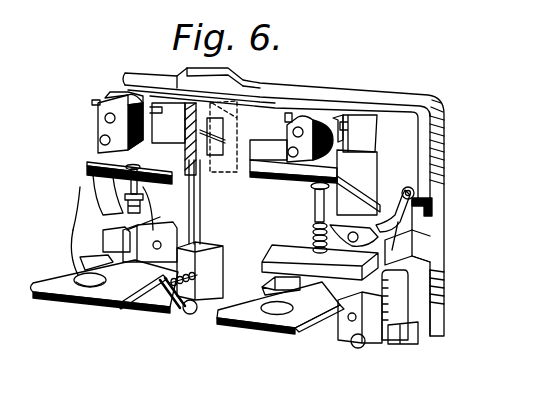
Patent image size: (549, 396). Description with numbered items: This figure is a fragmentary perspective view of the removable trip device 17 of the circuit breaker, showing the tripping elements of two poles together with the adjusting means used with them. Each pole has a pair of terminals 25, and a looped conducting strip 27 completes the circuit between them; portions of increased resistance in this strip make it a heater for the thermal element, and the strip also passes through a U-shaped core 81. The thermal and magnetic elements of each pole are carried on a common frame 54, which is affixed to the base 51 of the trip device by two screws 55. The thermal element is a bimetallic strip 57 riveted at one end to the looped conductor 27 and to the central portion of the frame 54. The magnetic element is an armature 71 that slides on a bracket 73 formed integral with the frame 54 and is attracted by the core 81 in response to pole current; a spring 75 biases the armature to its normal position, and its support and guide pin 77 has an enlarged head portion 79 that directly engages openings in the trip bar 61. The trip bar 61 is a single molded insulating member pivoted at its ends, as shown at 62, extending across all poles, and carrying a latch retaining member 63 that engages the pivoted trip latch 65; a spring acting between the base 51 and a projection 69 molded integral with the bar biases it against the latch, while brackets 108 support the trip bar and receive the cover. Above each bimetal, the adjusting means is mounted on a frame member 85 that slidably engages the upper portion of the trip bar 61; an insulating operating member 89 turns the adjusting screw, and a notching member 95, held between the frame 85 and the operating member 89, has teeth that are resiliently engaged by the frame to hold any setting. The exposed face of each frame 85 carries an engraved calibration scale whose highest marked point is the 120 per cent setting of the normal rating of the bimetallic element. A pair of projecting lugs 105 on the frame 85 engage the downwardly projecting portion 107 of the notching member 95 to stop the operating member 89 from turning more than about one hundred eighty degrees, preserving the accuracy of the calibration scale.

The removable trip device 17 is at (483, 182).
The terminal 25 is at (98, 304).
The looped conducting strip 27 is at (206, 198).
The base of the trip device 51 is at (434, 286).
The common frame 54 is at (218, 249).
The screw 55 is at (195, 313).
The bimetallic strip 57 is at (201, 218).
The trip bar 61 is at (90, 168).
The pivotal support of trip bar 62 is at (414, 193).
The latch retaining member 63 is at (240, 100).
The trip latch 65 is at (227, 127).
The projection 69 is at (92, 200).
The armature 71 is at (292, 270).
The bracket 73 is at (123, 225).
The spring 75 is at (144, 206).
The support and guide pin 77 is at (82, 183).
The enlarged head portion 79 is at (97, 152).
The U-shaped core 81 is at (150, 310).
The frame member 85 is at (122, 93).
The operating member 89 is at (97, 123).
The notching member 95 is at (157, 97).
The projecting lug 105 is at (92, 103).
The downwardly projecting portion 107 is at (315, 186).
The bracket 108 is at (434, 206).
The contact 120 is at (240, 131).